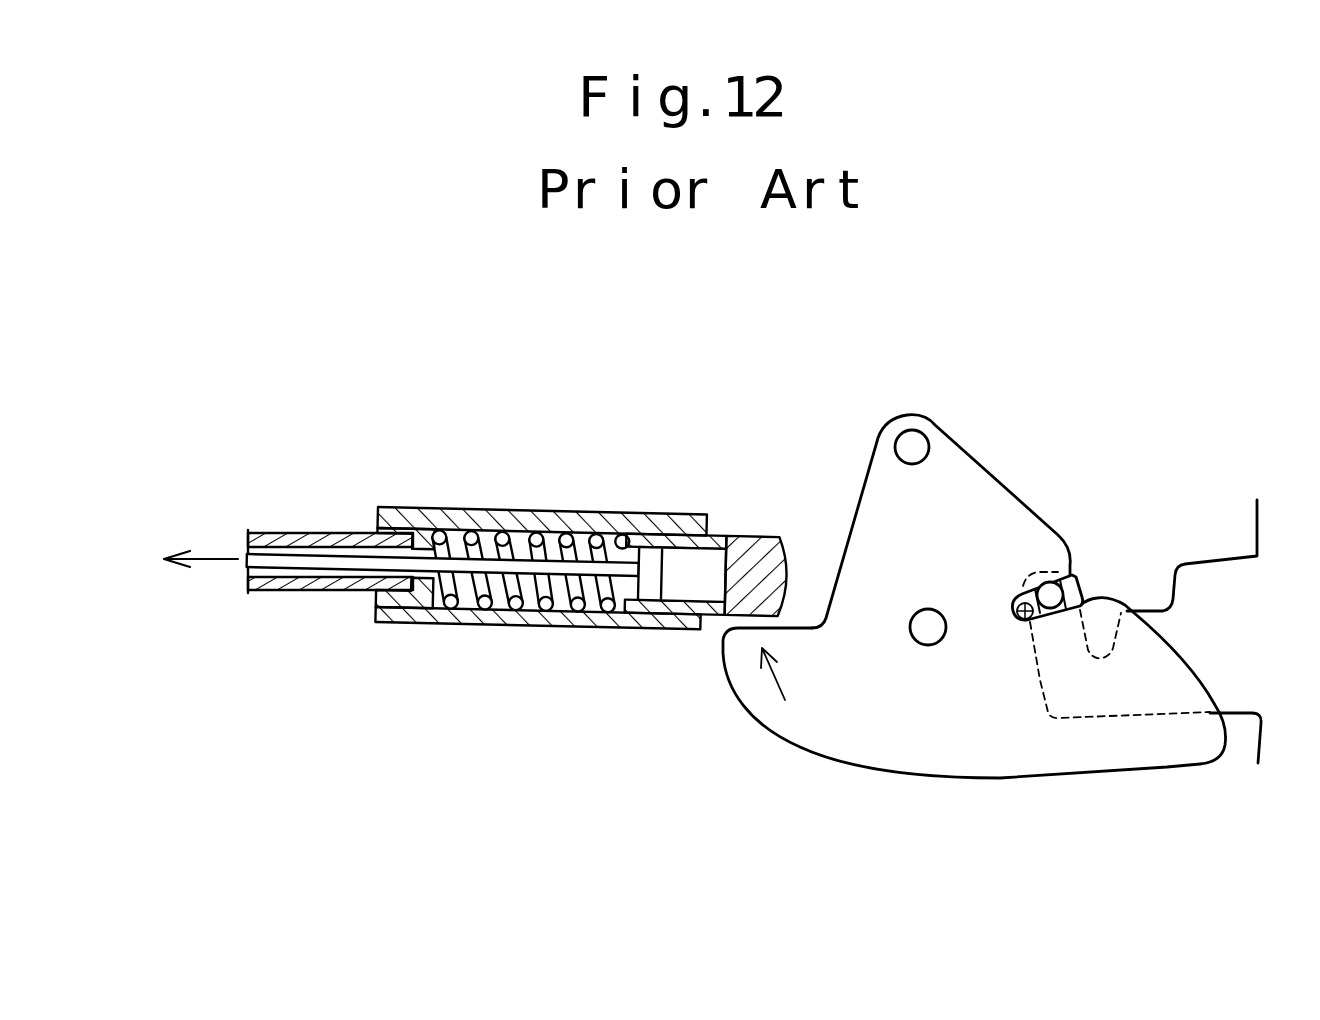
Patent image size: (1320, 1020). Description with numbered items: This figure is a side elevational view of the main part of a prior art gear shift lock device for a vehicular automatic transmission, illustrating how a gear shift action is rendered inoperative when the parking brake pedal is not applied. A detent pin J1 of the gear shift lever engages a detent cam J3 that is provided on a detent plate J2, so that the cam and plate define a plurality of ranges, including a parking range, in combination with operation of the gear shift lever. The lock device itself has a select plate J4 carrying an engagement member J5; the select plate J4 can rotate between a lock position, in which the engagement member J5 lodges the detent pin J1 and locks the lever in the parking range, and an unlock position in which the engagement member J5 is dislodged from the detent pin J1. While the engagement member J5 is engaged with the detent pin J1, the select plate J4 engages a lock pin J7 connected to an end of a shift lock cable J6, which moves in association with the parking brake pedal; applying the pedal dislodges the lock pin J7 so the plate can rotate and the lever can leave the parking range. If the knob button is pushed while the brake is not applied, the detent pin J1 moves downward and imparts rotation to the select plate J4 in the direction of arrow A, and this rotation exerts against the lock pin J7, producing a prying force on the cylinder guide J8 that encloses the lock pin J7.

The detent pin J1 is at (1082, 584).
The detent plate J2 is at (1223, 530).
The detent cam J3 is at (1183, 567).
The select plate J4 is at (958, 783).
The engagement member J5 is at (1018, 619).
The shift lock cable J6 is at (502, 572).
The lock pin J7 is at (516, 565).
The cylinder guide J8 is at (577, 512).
The arrow A is at (772, 680).